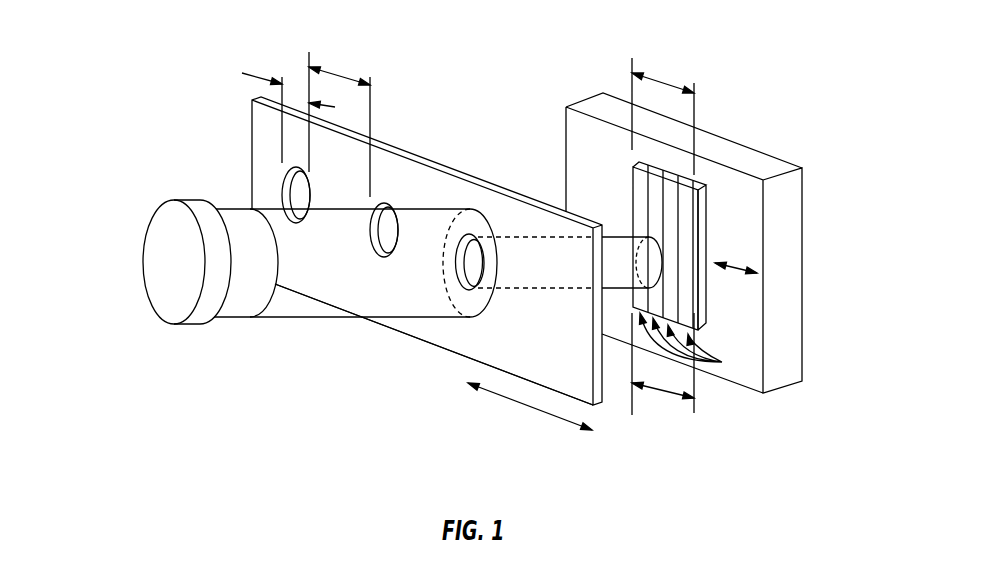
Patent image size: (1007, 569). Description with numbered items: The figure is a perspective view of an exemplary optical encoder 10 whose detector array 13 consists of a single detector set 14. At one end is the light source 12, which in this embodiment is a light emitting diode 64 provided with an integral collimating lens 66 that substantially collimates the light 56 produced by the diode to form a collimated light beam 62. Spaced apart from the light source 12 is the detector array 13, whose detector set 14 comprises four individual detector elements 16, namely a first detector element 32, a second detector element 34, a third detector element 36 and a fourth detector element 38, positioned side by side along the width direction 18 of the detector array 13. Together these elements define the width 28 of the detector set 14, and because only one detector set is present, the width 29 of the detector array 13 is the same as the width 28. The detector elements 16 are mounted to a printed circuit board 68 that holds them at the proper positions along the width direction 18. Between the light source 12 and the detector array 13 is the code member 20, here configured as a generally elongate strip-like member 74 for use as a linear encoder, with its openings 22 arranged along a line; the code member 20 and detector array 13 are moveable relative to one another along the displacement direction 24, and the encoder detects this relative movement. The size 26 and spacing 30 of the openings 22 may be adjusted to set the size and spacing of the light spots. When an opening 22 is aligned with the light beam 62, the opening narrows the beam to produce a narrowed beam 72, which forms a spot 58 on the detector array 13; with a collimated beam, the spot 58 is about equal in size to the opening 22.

The optical encoder 10 is at (180, 44).
The light source 12 is at (149, 211).
The detector array 13 is at (707, 187).
The detector set 14 is at (705, 312).
The detector elements 16 is at (696, 346).
The width direction 18 is at (736, 268).
The code member 20 is at (248, 141).
The openings 22 is at (370, 234).
The displacement direction 24 is at (529, 407).
The size of the openings 26 is at (258, 72).
The width of the detector set 28 is at (668, 392).
The width of the detector array 29 is at (660, 81).
The spacing of the openings 30 is at (342, 72).
The first detector element 32 is at (634, 187).
The second detector element 34 is at (645, 214).
The third detector element 36 is at (672, 202).
The fourth detector element 38 is at (684, 209).
The light 56 is at (339, 325).
The spot 58 is at (663, 241).
The light beam 62 is at (277, 319).
The light emitting diode 64 is at (151, 305).
The integral collimating lens 66 is at (281, 268).
The printed circuit board 68 is at (803, 257).
The narrowed beam 72 is at (556, 289).
The strip-like member 74 is at (413, 339).